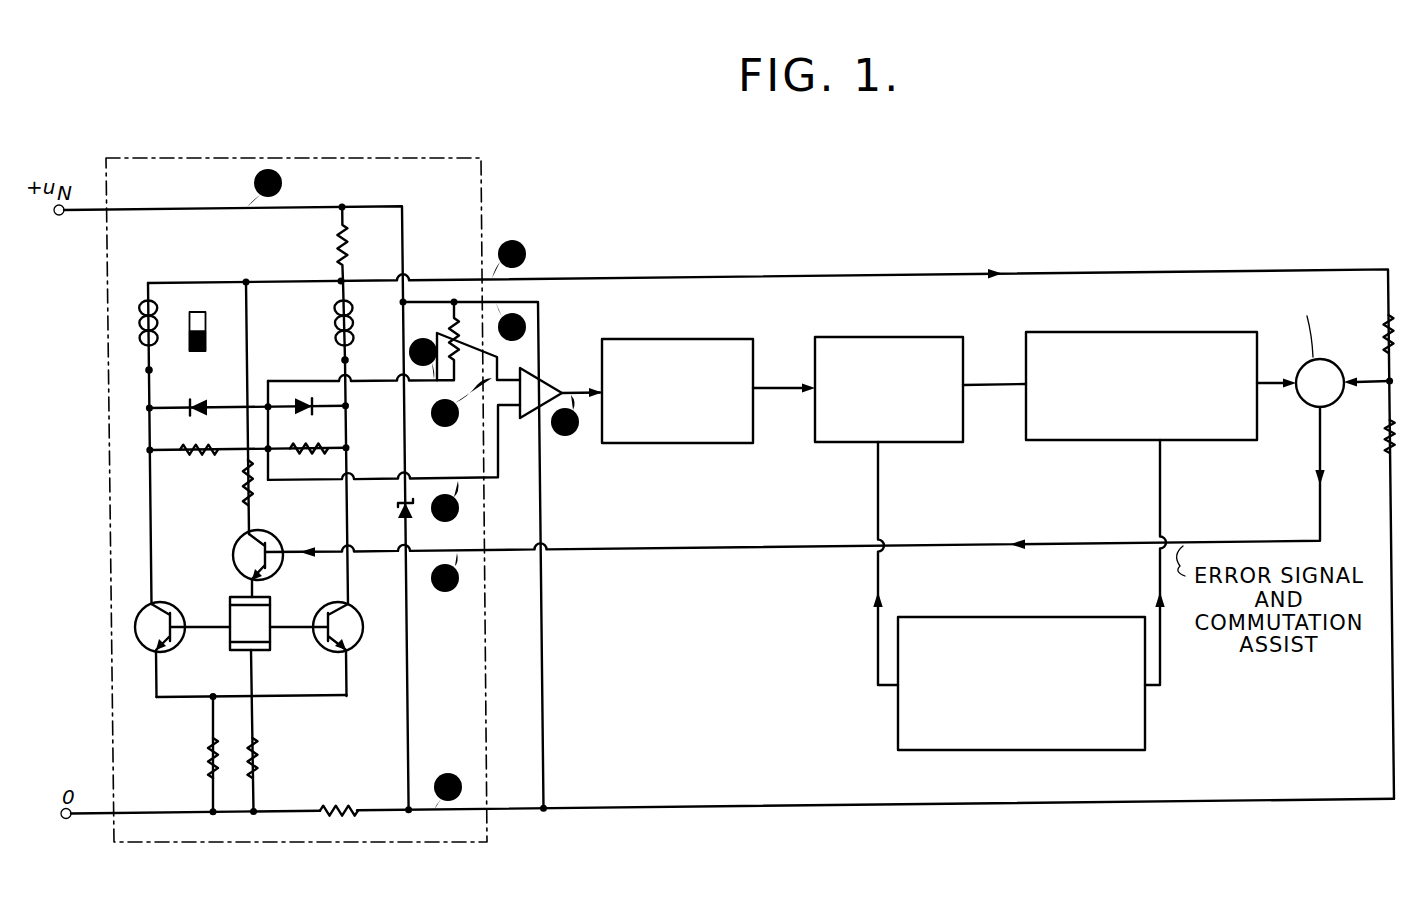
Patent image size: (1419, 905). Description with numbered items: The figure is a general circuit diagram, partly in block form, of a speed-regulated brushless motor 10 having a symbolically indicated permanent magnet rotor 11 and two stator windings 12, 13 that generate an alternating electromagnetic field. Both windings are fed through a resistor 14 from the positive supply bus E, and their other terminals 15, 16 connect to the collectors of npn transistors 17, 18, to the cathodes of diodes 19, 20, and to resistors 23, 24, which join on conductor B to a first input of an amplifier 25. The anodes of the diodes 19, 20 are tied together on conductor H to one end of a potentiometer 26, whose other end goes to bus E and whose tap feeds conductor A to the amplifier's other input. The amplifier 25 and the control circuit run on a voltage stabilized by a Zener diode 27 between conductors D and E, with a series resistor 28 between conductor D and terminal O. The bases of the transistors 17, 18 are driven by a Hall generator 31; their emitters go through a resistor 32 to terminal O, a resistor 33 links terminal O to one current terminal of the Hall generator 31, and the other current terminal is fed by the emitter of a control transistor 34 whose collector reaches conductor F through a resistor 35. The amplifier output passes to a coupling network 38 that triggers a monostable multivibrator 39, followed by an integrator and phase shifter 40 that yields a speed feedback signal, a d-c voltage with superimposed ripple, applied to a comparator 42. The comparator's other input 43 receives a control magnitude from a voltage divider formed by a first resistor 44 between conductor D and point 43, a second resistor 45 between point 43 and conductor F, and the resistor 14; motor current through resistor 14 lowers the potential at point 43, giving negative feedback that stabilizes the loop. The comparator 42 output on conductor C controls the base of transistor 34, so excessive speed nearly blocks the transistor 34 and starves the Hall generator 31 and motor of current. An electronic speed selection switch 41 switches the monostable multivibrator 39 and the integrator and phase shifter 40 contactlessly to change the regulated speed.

The motor 10 is at (301, 317).
The permanent magnet rotor 11 is at (206, 338).
The stator winding 12 is at (140, 322).
The stator winding 13 is at (353, 322).
The resistor 14 is at (338, 245).
The winding terminal 15 is at (152, 371).
The winding terminal 16 is at (341, 359).
The npn transistor 17 is at (162, 603).
The npn transistor 18 is at (351, 606).
The diode 19 is at (200, 400).
The diode 20 is at (302, 398).
The resistor 23 is at (200, 456).
The resistor 24 is at (292, 446).
The amplifier 25 is at (543, 379).
The potentiometer 26 is at (450, 329).
The Zener diode 27 is at (398, 510).
The series resistor 28 is at (337, 809).
The Hall generator 31 is at (264, 651).
The resistor 32 is at (209, 752).
The resistor 33 is at (258, 762).
The control transistor 34 is at (268, 541).
The resistor 35 is at (245, 505).
The coupling network 38 is at (688, 338).
The monostable multivibrator 39 is at (888, 337).
The integrator and phase shift circuit 40 is at (1118, 332).
The electronic speed selection switch 41 is at (1033, 617).
The comparator 42 is at (1308, 398).
The comparator input 43 is at (1346, 388).
The first resistor 44 is at (1387, 441).
The second resistor 45 is at (1384, 334).